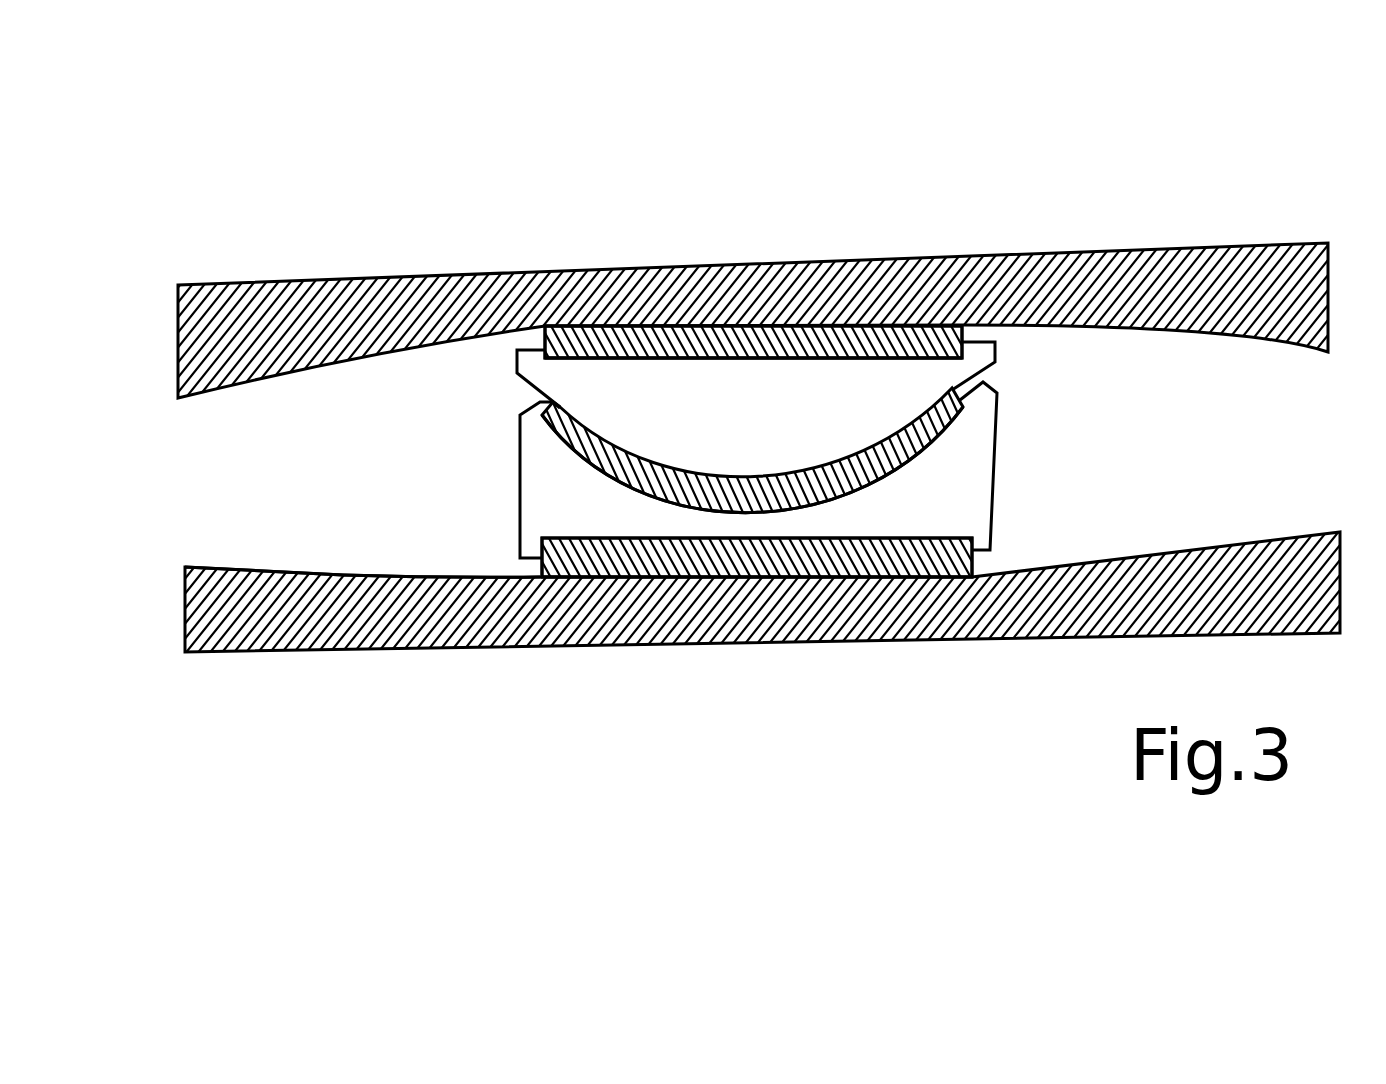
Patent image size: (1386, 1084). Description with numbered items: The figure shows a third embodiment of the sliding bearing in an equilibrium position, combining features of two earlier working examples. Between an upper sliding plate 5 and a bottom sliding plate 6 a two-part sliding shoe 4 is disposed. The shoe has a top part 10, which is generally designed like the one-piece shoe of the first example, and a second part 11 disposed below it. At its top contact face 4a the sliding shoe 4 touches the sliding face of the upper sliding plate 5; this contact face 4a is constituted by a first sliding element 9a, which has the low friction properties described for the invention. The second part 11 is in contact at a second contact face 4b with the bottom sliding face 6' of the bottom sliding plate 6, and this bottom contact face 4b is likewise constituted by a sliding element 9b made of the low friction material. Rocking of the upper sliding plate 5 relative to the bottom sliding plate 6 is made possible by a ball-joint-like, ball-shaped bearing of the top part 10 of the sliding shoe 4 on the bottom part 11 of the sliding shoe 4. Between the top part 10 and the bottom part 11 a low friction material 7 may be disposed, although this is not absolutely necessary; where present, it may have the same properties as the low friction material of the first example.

The sliding shoe 4 is at (1012, 442).
The top contact face 4a is at (700, 318).
The second contact face 4b is at (755, 586).
The sliding plate 5 is at (358, 322).
The bottom sliding plate 6 is at (762, 680).
The bottom sliding face 6' is at (362, 332).
The low friction material 7 is at (597, 447).
The first sliding element 9a is at (920, 340).
The sliding element 9b is at (893, 553).
The top part 10 is at (760, 415).
The second part 11 is at (627, 490).